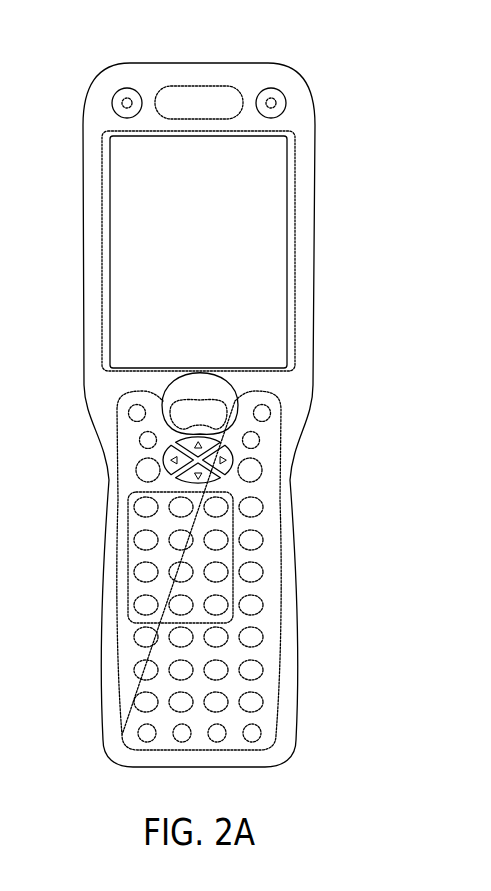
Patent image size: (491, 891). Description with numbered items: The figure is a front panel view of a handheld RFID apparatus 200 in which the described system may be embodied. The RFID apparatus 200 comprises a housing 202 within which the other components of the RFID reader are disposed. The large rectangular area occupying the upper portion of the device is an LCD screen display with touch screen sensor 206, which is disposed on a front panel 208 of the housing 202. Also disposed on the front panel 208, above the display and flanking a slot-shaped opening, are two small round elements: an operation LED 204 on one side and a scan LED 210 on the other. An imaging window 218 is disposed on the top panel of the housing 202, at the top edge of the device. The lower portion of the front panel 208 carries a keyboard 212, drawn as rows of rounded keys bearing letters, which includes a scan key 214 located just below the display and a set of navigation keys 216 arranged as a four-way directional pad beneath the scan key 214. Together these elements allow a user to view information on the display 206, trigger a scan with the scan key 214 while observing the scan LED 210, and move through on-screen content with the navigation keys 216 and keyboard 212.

The RFID apparatus 200 is at (342, 61).
The housing 202 is at (317, 272).
The operation LED 204 is at (116, 93).
The LCD screen display with touch screen sensor 206 is at (120, 215).
The front panel 208 is at (82, 150).
The scan LED 210 is at (285, 108).
The keyboard 212 is at (128, 560).
The scan key 214 is at (190, 400).
The navigation keys 216 is at (163, 459).
The imaging window 218 is at (198, 62).